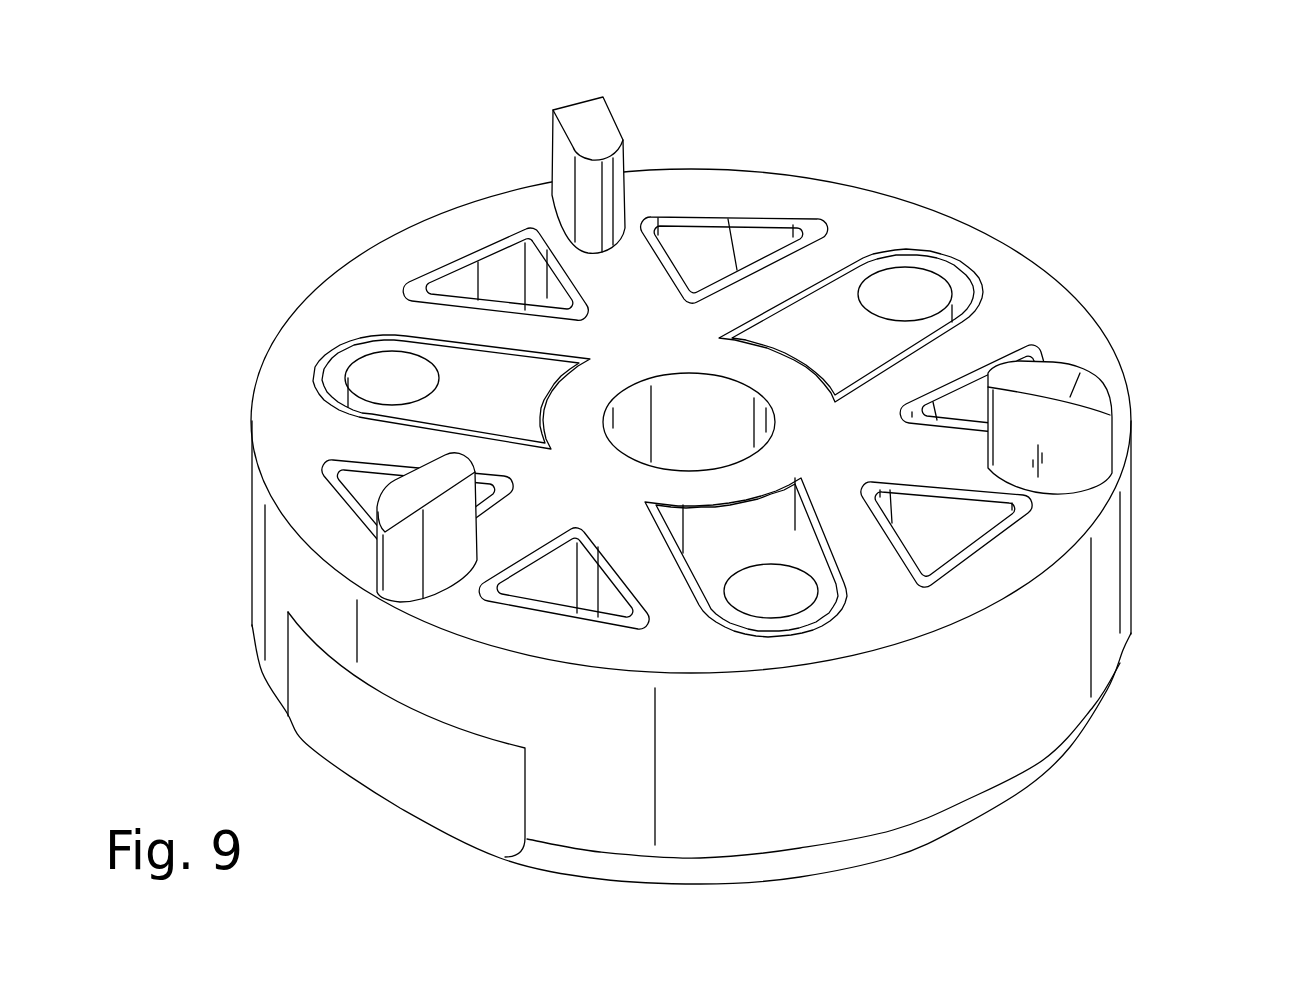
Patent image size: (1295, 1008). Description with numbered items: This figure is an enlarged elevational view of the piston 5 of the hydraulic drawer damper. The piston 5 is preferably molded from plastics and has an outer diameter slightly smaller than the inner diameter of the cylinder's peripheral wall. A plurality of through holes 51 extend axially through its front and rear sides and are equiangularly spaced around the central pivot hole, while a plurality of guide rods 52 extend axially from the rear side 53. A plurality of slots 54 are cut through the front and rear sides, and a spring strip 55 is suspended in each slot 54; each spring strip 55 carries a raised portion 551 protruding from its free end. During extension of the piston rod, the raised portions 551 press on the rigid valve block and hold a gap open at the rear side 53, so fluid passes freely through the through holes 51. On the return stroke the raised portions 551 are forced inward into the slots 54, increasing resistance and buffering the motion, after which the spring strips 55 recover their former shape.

The piston 5 is at (1153, 470).
The through holes 51 is at (508, 250).
The guide rods 52 is at (630, 157).
The rear side 53 is at (1067, 292).
The slots 54 is at (863, 270).
The spring strips 55 is at (829, 302).
The raised portion 551 is at (933, 280).